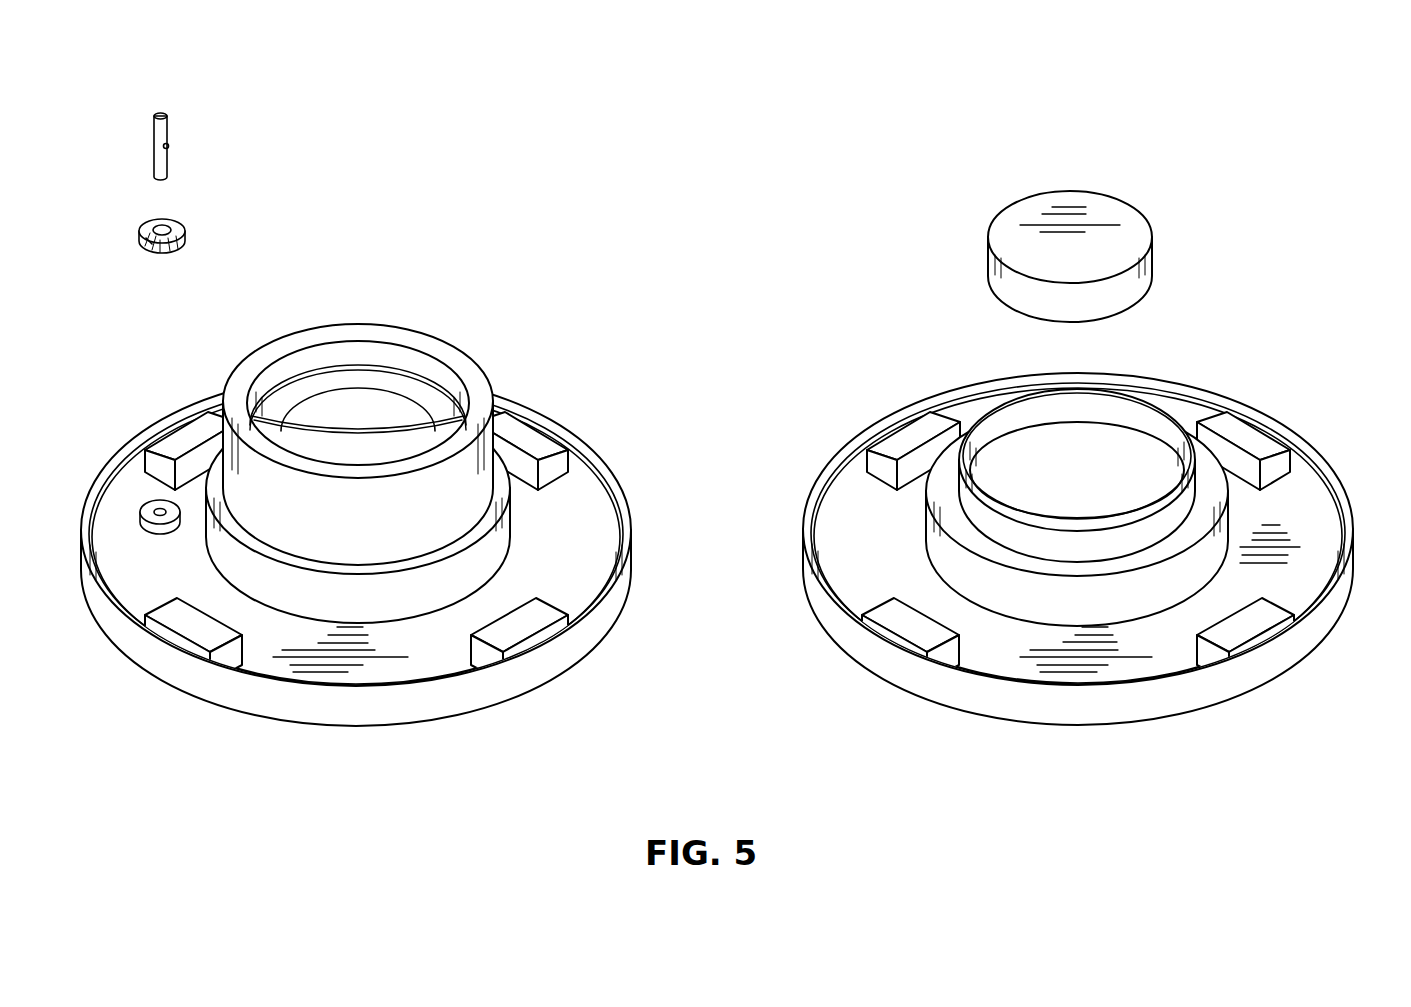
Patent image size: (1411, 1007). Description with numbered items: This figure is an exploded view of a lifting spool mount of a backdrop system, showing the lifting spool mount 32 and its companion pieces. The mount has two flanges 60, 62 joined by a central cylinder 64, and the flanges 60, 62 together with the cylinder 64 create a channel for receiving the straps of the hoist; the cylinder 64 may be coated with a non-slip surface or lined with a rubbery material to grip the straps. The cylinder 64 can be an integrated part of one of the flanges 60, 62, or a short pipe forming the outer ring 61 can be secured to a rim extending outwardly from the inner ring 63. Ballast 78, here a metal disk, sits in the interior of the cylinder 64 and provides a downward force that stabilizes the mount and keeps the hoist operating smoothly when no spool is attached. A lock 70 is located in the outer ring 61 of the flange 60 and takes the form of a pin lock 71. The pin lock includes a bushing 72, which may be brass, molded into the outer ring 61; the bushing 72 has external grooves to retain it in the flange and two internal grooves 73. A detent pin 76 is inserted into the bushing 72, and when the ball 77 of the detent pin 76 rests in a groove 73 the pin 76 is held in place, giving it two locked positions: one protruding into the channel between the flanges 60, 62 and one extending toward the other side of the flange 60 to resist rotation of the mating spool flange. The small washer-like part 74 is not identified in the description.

The lifting spool mount 32 is at (1116, 359).
The flange 60 is at (371, 473).
The outer ring 61 is at (512, 352).
The flange 62 is at (503, 465).
The inner ring 63 is at (1155, 398).
The central cylinder 64 is at (370, 531).
The lock 70 is at (212, 105).
The pin lock 71 is at (210, 186).
The bushing 72 is at (177, 223).
The internal groove 73 is at (149, 235).
The washer 74 is at (142, 540).
The detent pin 76 is at (167, 128).
The ball 77 is at (168, 146).
The ballast 78 is at (1088, 268).